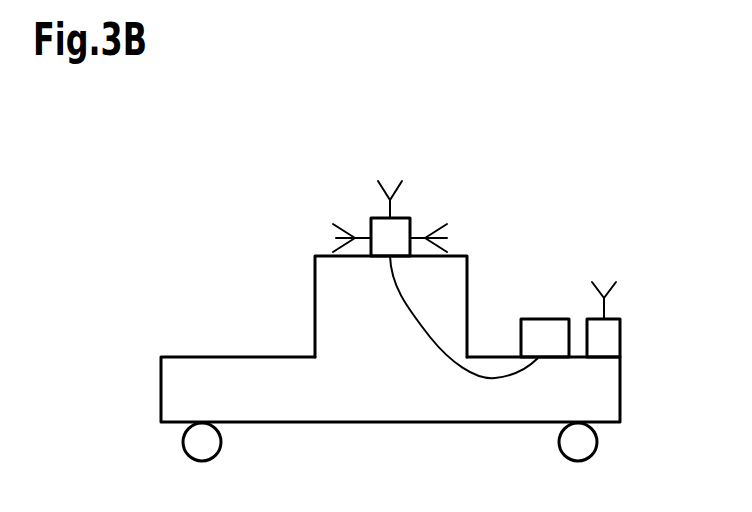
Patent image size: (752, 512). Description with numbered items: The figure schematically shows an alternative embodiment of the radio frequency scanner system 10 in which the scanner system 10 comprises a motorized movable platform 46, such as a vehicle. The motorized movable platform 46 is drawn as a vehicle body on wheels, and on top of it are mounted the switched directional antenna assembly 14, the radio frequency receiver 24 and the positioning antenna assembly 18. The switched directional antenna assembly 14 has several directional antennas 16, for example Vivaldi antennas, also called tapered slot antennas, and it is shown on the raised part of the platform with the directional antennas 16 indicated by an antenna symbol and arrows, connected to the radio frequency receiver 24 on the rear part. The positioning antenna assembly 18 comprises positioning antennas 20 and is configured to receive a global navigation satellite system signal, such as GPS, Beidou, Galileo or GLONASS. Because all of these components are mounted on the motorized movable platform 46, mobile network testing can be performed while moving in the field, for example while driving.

The radio frequency scanner system 10 is at (218, 204).
The switched directional antenna assembly 14 is at (463, 192).
The directional antennas 16 is at (388, 201).
The positioning antenna assembly 18 is at (620, 333).
The positioning antennas 20 is at (605, 287).
The radio frequency receiver 24 is at (537, 319).
The motorized movable platform 46 is at (620, 401).